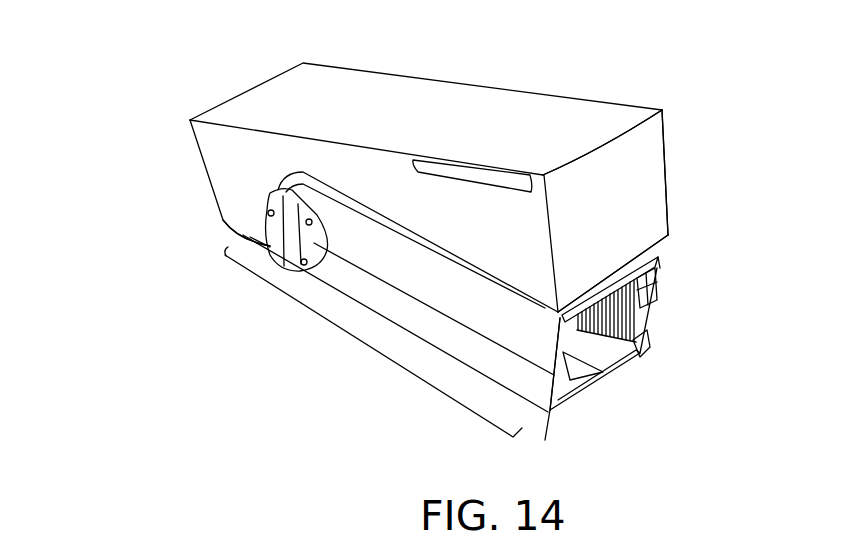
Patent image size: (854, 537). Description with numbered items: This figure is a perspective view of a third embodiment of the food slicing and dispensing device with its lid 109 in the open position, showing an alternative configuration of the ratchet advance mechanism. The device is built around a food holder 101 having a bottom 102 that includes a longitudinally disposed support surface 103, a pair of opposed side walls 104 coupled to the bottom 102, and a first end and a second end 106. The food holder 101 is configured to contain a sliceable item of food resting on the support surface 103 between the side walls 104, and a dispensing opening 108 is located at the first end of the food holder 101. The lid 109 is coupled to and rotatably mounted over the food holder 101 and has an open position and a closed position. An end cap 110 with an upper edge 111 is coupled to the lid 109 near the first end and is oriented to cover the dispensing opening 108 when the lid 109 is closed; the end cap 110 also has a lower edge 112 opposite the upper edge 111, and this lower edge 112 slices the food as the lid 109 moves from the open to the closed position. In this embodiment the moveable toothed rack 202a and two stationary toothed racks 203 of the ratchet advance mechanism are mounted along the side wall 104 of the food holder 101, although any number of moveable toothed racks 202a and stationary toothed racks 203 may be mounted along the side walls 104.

The food holder 101 is at (372, 345).
The bottom 102 is at (463, 358).
The support surface 103 is at (550, 410).
The side walls 104 is at (353, 277).
The second end 106 is at (176, 159).
The dispensing opening 108 is at (598, 386).
The lid 109 is at (447, 112).
The end cap 110 is at (672, 240).
The upper edge 111 is at (625, 158).
The lower edge 112 is at (625, 205).
The moveable toothed rack 202a is at (653, 300).
The stationary toothed racks 203 is at (658, 276).